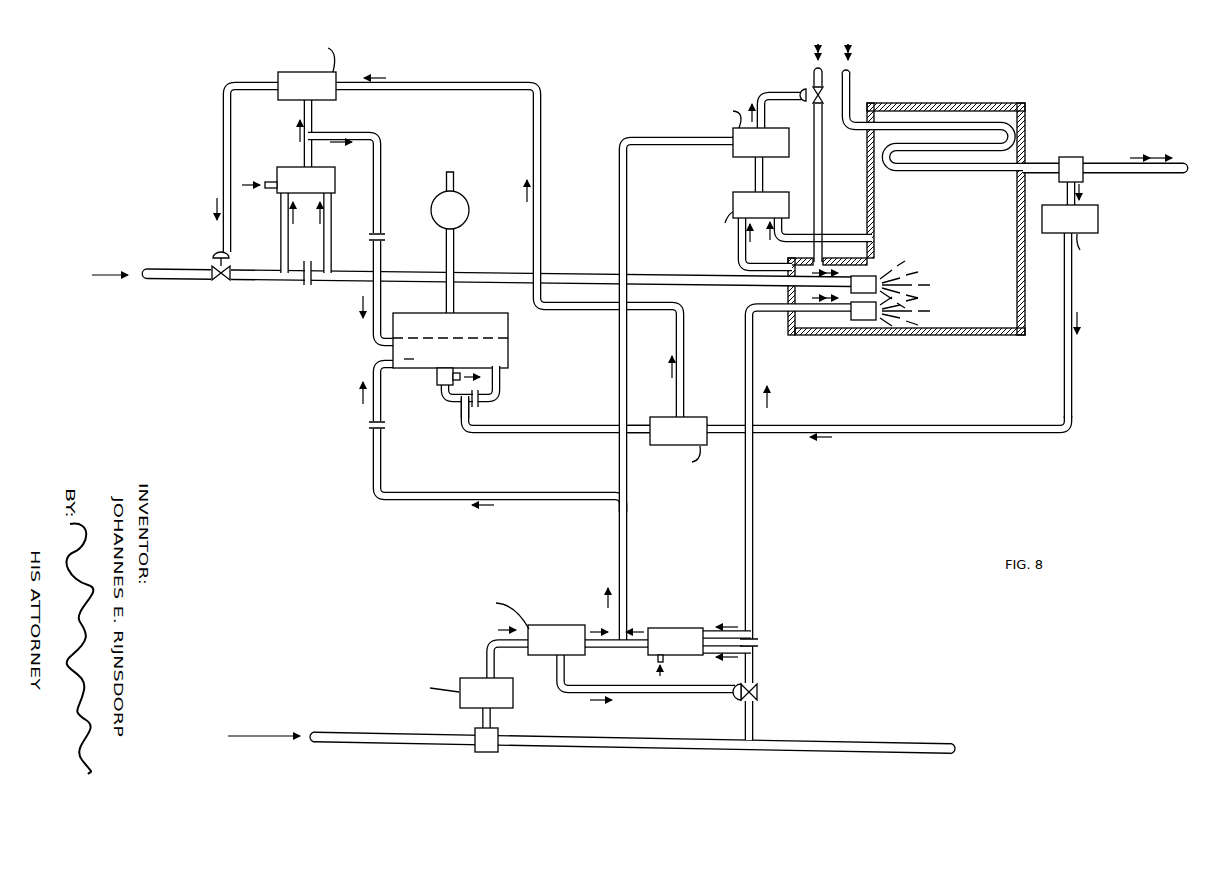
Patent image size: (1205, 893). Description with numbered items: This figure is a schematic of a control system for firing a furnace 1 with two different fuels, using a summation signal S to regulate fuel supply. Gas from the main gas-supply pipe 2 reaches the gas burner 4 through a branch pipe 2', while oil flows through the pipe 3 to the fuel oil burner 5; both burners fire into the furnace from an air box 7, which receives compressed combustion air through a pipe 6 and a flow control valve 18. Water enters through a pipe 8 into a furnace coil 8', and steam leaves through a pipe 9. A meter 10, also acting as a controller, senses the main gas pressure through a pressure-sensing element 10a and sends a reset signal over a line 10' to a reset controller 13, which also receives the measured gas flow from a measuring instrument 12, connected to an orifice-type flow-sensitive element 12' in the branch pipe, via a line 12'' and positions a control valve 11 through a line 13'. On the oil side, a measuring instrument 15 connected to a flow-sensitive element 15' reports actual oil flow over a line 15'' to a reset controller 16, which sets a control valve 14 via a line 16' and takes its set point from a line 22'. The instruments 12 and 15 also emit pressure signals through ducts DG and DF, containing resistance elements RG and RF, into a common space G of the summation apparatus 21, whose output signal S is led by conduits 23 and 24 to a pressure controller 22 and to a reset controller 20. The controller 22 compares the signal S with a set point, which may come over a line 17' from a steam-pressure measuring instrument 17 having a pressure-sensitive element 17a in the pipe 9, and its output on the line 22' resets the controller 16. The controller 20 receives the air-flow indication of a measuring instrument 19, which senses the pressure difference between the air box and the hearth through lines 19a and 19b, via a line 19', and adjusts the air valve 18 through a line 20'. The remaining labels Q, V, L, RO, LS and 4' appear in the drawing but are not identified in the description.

The furnace 1 is at (966, 334).
The main gas-supply pipe 2 is at (588, 742).
The branch pipe 2' is at (800, 524).
The pipe 3 is at (165, 279).
The gas burner 4 is at (871, 325).
The controller connection 4' is at (661, 672).
The fuel oil burner 5 is at (877, 277).
The pipe 6 is at (812, 76).
The air box 7 is at (826, 334).
The pipe 8 is at (856, 85).
The furnace coil 8' is at (946, 159).
The pipe 9 is at (1116, 165).
The meter 10 is at (428, 686).
The pressure-sensing element 10a is at (478, 754).
The line 10' is at (490, 654).
The control valve 11 is at (757, 692).
The measuring instrument 12 is at (699, 651).
The flow-sensitive element 12' is at (764, 649).
The line 12'' is at (616, 654).
The reset controller 13 is at (470, 634).
The line 13' is at (648, 684).
The control valve 14 is at (223, 282).
The measuring instrument 15 is at (288, 213).
The flow-sensitive element 15' is at (291, 283).
The line 15'' is at (325, 133).
The reset controller 16 is at (264, 81).
The line 16' is at (231, 169).
The measuring instrument 17 is at (1104, 248).
The pressure-sensitive element 17a is at (1062, 157).
The line 17' is at (1085, 325).
The flow control valve 18 is at (812, 104).
The measuring instrument 19 is at (710, 222).
The line 19' is at (743, 174).
The line 19a is at (744, 262).
The line 19b is at (858, 240).
The reset controller 20 is at (723, 132).
The line 20' is at (776, 100).
The apparatus 21 is at (420, 312).
The pressure controller 22 is at (623, 430).
The line 22' is at (522, 247).
The conduit 23 is at (632, 427).
The line 24 is at (616, 400).
The pressure regulator Q is at (468, 205).
The common space G is at (409, 352).
The valve V is at (436, 380).
The line L is at (502, 392).
The summation signal S is at (548, 428).
The resistance element RF is at (384, 236).
The duct DF is at (379, 248).
The resistance element RG is at (370, 425).
The duct DG is at (372, 462).
The restriction RO is at (482, 402).
The line LS is at (482, 433).